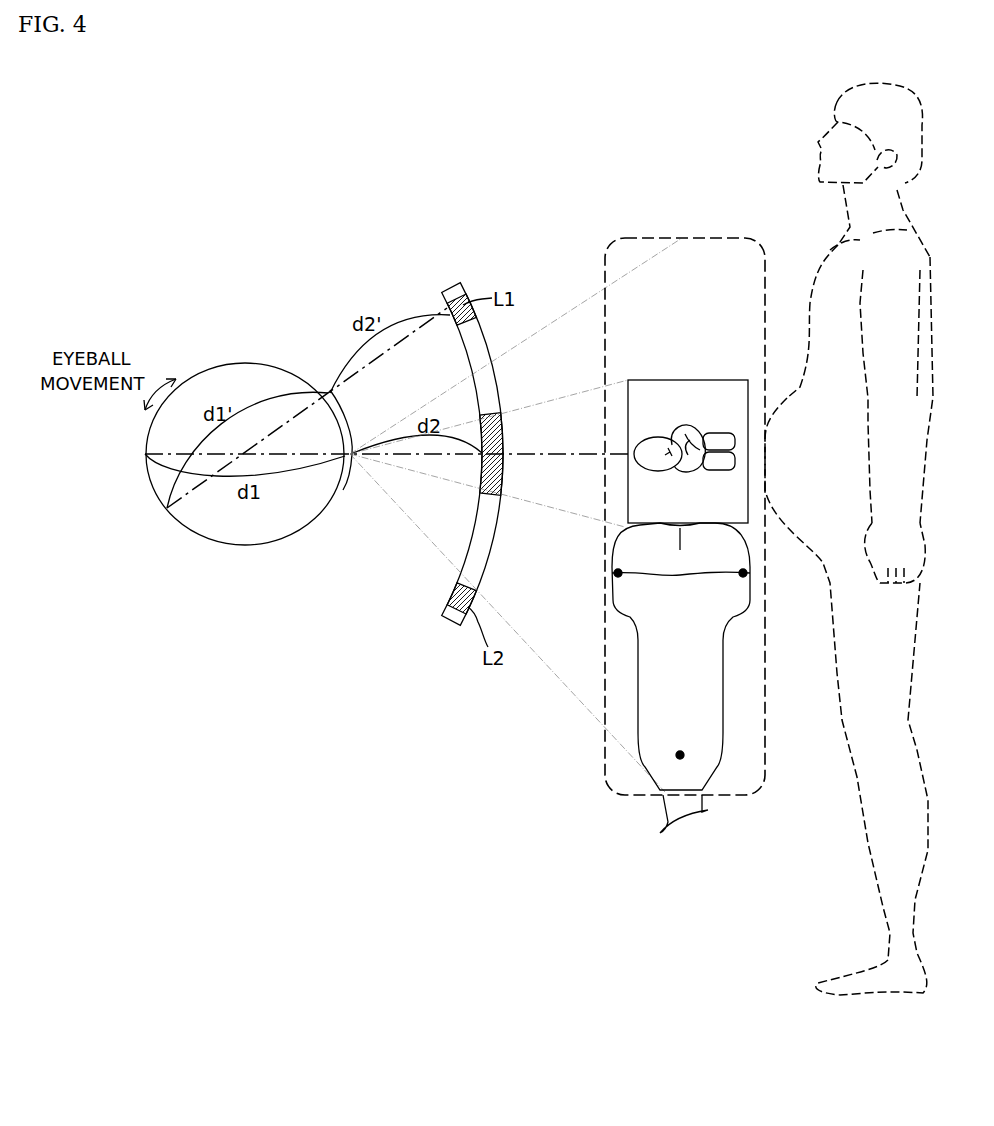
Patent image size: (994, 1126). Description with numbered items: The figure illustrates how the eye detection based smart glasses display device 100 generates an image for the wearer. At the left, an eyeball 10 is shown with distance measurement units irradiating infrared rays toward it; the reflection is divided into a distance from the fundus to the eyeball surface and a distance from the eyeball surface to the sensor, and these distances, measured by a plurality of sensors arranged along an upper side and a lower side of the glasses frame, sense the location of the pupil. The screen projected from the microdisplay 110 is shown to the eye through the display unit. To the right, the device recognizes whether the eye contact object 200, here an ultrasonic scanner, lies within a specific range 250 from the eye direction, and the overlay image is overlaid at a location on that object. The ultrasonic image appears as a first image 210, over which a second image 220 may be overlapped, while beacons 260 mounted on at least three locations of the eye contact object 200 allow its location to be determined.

The eyeball 10 is at (346, 489).
The eye detection based smart glasses display device 100 is at (445, 285).
The microdisplay 110 is at (250, 363).
The eye contact object 200 is at (638, 658).
The first image 210 is at (689, 380).
The second image 220 is at (504, 478).
The specific range 250 is at (636, 797).
The beacons 260 is at (618, 573).